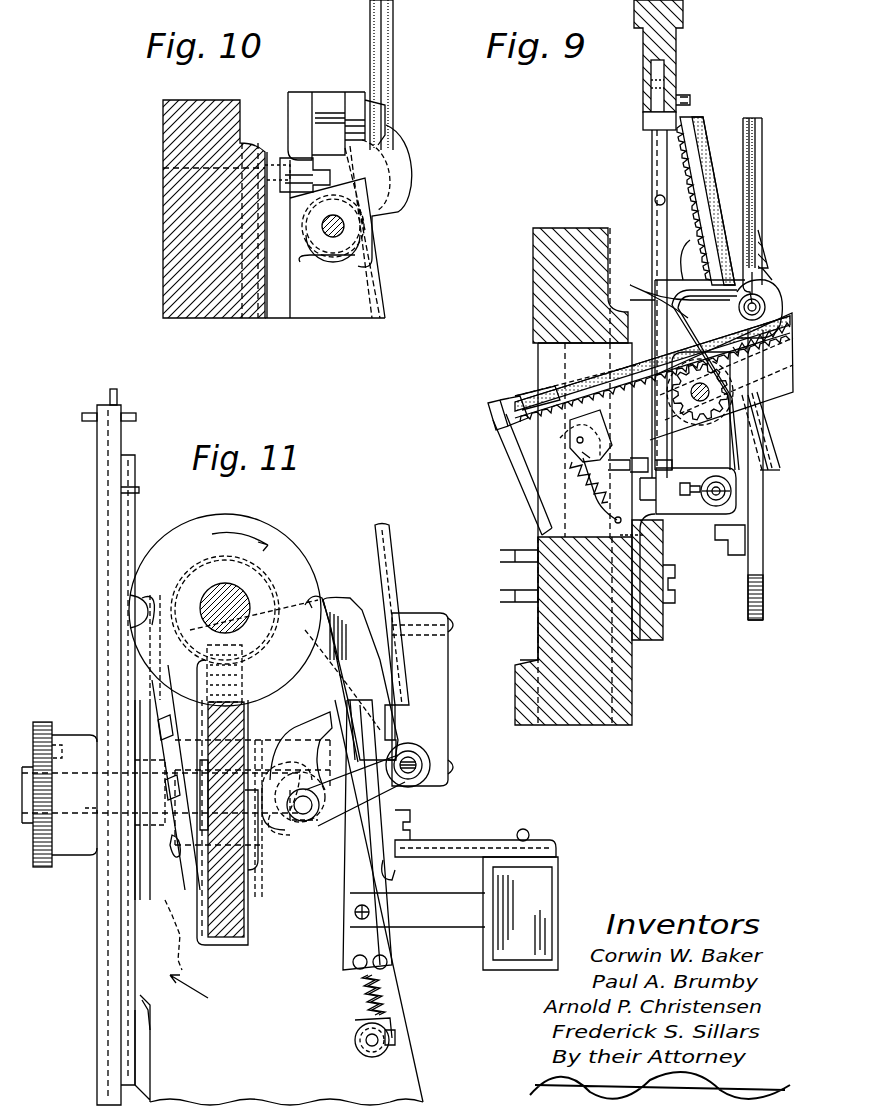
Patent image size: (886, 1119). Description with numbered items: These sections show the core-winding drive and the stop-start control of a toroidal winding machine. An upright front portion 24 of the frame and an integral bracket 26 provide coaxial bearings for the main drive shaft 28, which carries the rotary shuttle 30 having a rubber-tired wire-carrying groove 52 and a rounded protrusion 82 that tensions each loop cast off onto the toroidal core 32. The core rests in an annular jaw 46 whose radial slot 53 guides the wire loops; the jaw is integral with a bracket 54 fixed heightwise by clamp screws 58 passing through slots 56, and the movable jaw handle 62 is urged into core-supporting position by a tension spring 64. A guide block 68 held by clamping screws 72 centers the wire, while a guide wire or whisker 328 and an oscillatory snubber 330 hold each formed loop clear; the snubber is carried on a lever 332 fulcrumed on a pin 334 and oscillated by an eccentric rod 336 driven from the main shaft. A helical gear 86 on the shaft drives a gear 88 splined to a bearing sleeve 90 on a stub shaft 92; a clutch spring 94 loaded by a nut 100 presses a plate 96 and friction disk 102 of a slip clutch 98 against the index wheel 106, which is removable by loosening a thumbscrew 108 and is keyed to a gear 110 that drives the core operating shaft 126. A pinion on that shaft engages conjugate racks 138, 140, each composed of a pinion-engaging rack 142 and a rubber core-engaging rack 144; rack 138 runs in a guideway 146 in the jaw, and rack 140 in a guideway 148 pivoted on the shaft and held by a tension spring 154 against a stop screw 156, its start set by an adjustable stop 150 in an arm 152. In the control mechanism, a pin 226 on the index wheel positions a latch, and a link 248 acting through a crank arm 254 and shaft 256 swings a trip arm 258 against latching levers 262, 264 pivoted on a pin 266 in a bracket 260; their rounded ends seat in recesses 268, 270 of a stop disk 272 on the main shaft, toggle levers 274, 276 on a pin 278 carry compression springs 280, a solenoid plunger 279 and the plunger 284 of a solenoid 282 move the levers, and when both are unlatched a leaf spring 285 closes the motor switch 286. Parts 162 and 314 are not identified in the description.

In FIG. 10, the upright front portion 24 is at (163, 282).
In FIG. 9, the upright front portion 24 is at (533, 304).
In FIG. 11, the vertically extending bracket 26 is at (420, 1095).
In FIG. 11, the main drive shaft 28 is at (212, 590).
In FIG. 10, the rotary bobbin or shuttle 30 is at (395, 4).
In FIG. 9, the rotary bobbin or shuttle 30 is at (760, 168).
In FIG. 9, the toroidal core 32 is at (788, 271).
In FIG. 10, the annular jaw 46 is at (378, 293).
In FIG. 9, the annular jaw 46 is at (680, 280).
In FIG. 10, the wire-carrying groove 52 is at (393, 38).
In FIG. 9, the wire-carrying groove 52 is at (760, 130).
In FIG. 9, the radial slots 53 is at (750, 290).
In FIG. 10, the bracket 54 is at (275, 316).
In FIG. 9, the bracket 54 is at (664, 633).
In FIG. 9, the vertically extending slots 56 is at (648, 608).
In FIG. 9, the clamp screws 58 is at (678, 592).
In FIG. 9, the operating handle 62 is at (757, 622).
In FIG. 9, the tension spring 64 is at (720, 552).
In FIG. 10, the guide block 68 is at (392, 128).
In FIG. 10, the clamping screws 72 is at (350, 184).
In FIG. 9, the rounded protrusion 82 is at (763, 250).
In FIG. 11, the helical gear 86 is at (264, 642).
In FIG. 11, the gear 88 is at (212, 870).
In FIG. 11, the bearing sleeve 90 is at (196, 866).
In FIG. 11, the stub shaft 92 is at (258, 850).
In FIG. 11, the clutch spring 94 is at (182, 955).
In FIG. 11, the plate 96 is at (148, 998).
In FIG. 11, the friction slip clutch 98 is at (201, 991).
In FIG. 11, the nut 100 is at (198, 720).
In FIG. 11, the friction disk 102 is at (148, 1010).
In FIG. 11, the index wheel 106 is at (97, 548).
In FIG. 11, the thumbscrew 108 is at (278, 748).
In FIG. 11, the gear 110 is at (42, 722).
In FIG. 10, the core operating shaft 126 is at (329, 238).
In FIG. 9, the core operating shaft 126 is at (698, 410).
In FIG. 9, the rack 138 is at (690, 117).
In FIG. 9, the rack 140 is at (522, 408).
In FIG. 9, the pinion-engaging rack 142 is at (568, 431).
In FIG. 9, the core-engaging rack 144 is at (708, 140).
In FIG. 9, the guideway 146 is at (675, 302).
In FIG. 9, the guideway 148 is at (788, 393).
In FIG. 9, the adjustable stop 150 is at (494, 420).
In FIG. 9, the arm 152 is at (504, 470).
In FIG. 9, the tension spring 154 is at (605, 495).
In FIG. 9, the stop screw 156 is at (592, 470).
In FIG. 11, the pivot pins 162 is at (136, 417).
In FIG. 11, the pin 226 is at (118, 394).
In FIG. 11, the link 248 is at (392, 552).
In FIG. 11, the crank arm 254 is at (340, 822).
In FIG. 11, the shaft 256 is at (305, 820).
In FIG. 11, the trip arm 258 is at (312, 718).
In FIG. 11, the bracket 260 is at (470, 838).
In FIG. 11, the latching lever 262 is at (368, 612).
In FIG. 11, the latching lever 264 is at (332, 678).
In FIG. 11, the pin 266 is at (400, 812).
In FIG. 11, the recess 268 is at (142, 596).
In FIG. 11, the recess 270 is at (312, 592).
In FIG. 11, the rotary stop disk 272 is at (298, 555).
In FIG. 11, the lever 274 is at (355, 1022).
In FIG. 11, the lever 276 is at (395, 1030).
In FIG. 11, the pin 278 is at (358, 1052).
In FIG. 11, the solenoid plunger 279 is at (352, 912).
In FIG. 11, the compression springs 280 is at (360, 978).
In FIG. 11, the solenoid 282 is at (523, 972).
In FIG. 11, the plunger 284 is at (436, 927).
In FIG. 11, the leaf spring 285 is at (392, 870).
In FIG. 11, the switch 286 is at (450, 686).
In FIG. 11, the guide plate 314 is at (136, 505).
In FIG. 10, the guide wire 328 is at (404, 204).
In FIG. 9, the oscillatory snubber 330 is at (665, 290).
In FIG. 9, the lever 332 is at (688, 514).
In FIG. 9, the pin 334 is at (735, 500).
In FIG. 9, the eccentric rod 336 is at (652, 172).